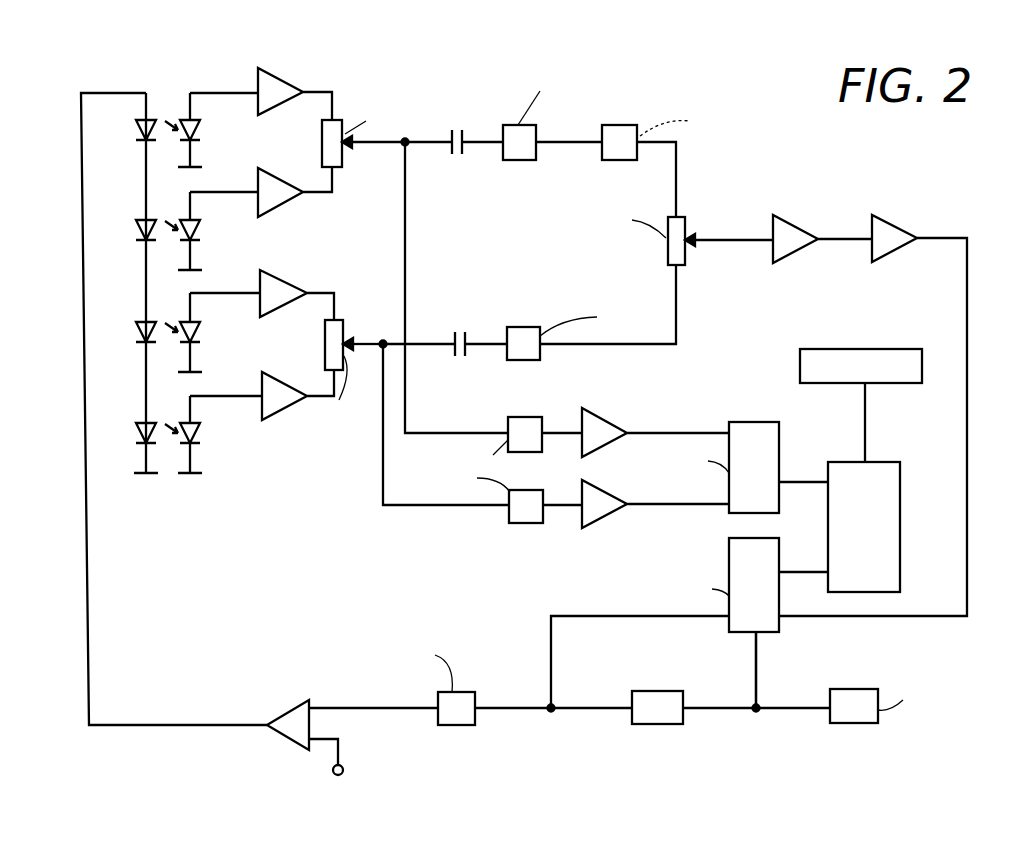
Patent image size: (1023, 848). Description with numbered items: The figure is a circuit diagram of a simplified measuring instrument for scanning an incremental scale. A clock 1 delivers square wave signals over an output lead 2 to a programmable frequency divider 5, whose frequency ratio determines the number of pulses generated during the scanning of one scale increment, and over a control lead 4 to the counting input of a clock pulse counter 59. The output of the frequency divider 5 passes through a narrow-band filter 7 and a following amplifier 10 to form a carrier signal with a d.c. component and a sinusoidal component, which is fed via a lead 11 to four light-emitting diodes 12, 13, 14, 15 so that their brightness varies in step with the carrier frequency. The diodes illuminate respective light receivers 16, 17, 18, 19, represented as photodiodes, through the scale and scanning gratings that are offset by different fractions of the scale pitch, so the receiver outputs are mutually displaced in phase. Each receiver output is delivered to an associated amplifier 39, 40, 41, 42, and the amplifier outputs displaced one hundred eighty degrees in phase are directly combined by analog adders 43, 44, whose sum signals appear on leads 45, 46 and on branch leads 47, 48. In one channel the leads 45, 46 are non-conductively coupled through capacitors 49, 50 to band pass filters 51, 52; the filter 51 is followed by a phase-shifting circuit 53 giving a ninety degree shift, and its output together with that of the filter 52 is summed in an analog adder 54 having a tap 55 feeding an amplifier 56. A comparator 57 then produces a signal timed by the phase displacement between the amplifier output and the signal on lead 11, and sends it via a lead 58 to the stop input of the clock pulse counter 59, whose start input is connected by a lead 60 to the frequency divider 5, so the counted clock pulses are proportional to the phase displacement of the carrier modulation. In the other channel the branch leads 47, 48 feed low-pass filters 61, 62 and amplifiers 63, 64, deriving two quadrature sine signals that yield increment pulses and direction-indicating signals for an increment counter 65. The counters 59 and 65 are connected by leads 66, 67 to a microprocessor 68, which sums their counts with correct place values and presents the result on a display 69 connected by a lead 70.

The clock 1 is at (847, 724).
The output lead 2 is at (792, 707).
The control lead 4 is at (755, 665).
The programmable frequency divider 5 is at (647, 724).
The narrow-band filter 7 is at (452, 725).
The amplifier 10 is at (287, 712).
The lead 11 is at (90, 573).
The light-emitting diode 12 is at (137, 135).
The light-emitting diode 13 is at (137, 235).
The light-emitting diode 14 is at (137, 337).
The light-emitting diode 15 is at (137, 438).
The light receiver 16 is at (202, 134).
The light receiver 17 is at (202, 235).
The light receiver 18 is at (202, 337).
The light receiver 19 is at (202, 438).
The amplifier 39 is at (285, 85).
The amplifier 40 is at (279, 170).
The amplifier 41 is at (278, 280).
The amplifier 42 is at (278, 381).
The analog adder 43 is at (344, 136).
The analog adder 44 is at (345, 333).
The lead 45 is at (423, 144).
The lead 46 is at (423, 343).
The branch lead 47 is at (408, 237).
The branch lead 48 is at (383, 460).
The capacitor 49 is at (463, 128).
The capacitor 50 is at (463, 331).
The band pass filter 51 is at (527, 127).
The band pass filter 52 is at (507, 353).
The phase-shifting circuit 53 is at (617, 123).
The analog adder 54 is at (693, 258).
The tap 55 is at (731, 240).
The amplifier 56 is at (803, 216).
The comparator 57 is at (887, 222).
The lead 58 is at (972, 312).
The clock pulse counter 59 is at (783, 623).
The lead 60 is at (548, 627).
The low-pass filter 61 is at (520, 417).
The low-pass filter 62 is at (528, 527).
The amplifier 63 is at (610, 421).
The amplifier 64 is at (603, 518).
The increment counter 65 is at (745, 422).
The lead 66 is at (797, 572).
The lead 67 is at (805, 480).
The microprocessor 68 is at (900, 490).
The display 69 is at (815, 348).
The lead 70 is at (865, 413).